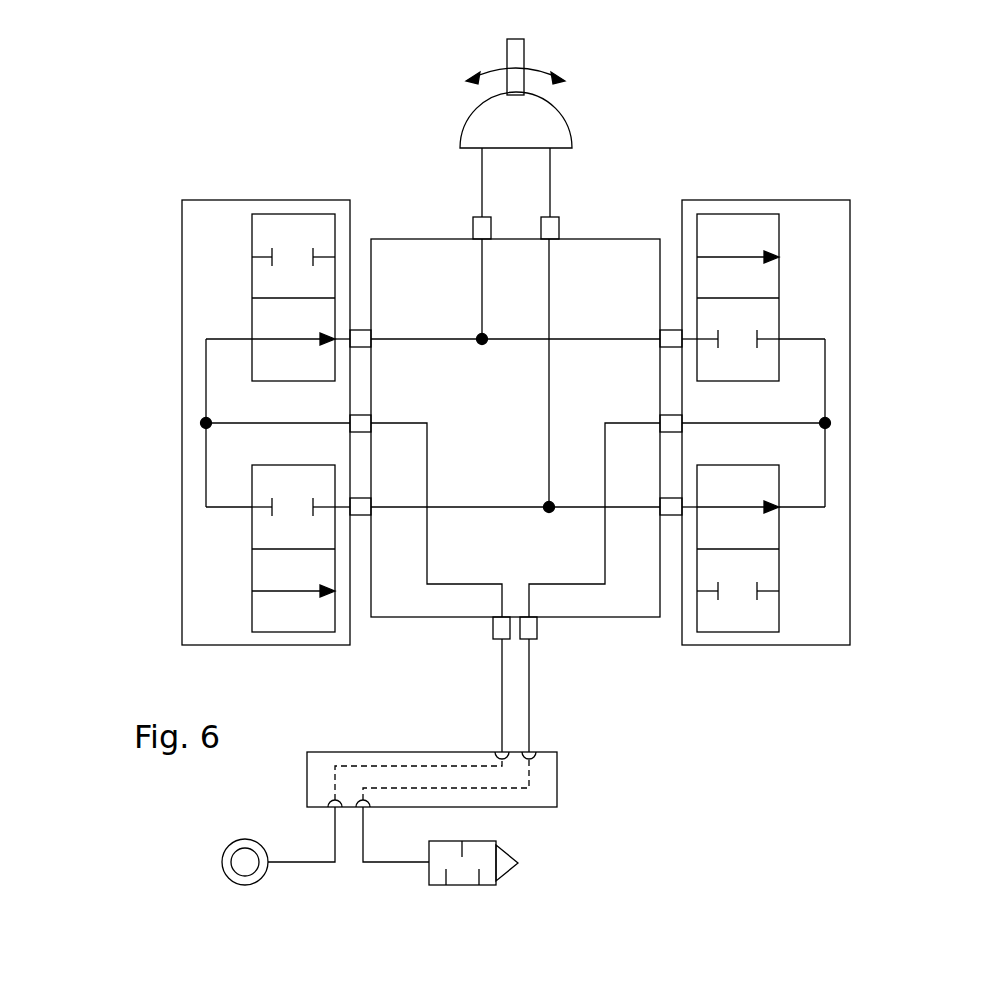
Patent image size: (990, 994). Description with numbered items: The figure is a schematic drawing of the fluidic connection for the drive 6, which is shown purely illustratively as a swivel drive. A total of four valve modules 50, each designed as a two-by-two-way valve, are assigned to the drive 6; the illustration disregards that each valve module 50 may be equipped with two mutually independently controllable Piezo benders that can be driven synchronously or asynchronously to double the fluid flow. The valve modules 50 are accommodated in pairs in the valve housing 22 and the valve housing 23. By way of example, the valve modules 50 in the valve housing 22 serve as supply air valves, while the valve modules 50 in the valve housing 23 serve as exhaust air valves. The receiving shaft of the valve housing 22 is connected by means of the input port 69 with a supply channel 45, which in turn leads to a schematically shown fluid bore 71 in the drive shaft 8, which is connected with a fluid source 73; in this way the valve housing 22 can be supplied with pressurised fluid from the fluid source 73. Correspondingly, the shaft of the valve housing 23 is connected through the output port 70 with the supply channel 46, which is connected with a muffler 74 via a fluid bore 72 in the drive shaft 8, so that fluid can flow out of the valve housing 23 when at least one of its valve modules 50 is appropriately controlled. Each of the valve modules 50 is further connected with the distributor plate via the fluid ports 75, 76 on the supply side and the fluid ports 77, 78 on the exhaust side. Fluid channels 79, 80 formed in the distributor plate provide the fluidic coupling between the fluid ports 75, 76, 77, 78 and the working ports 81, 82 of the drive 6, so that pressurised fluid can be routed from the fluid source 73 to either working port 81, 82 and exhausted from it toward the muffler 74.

The drive 6 is at (550, 135).
The drive shaft 8 is at (548, 780).
The valve housing 22 is at (182, 250).
The valve housing 23 is at (850, 393).
The supply channel 45 is at (460, 584).
The supply channel 46 is at (567, 584).
The valve module 50 is at (252, 323).
The input port 69 is at (357, 423).
The output port 70 is at (672, 423).
The fluid bore 71 is at (365, 765).
The fluid bore 72 is at (445, 787).
The fluid source 73 is at (245, 870).
The muffler 74 is at (490, 876).
The fluid port 75 is at (359, 330).
The fluid port 76 is at (357, 507).
The fluid port 77 is at (672, 330).
The fluid port 78 is at (672, 507).
The fluid channel 79 is at (481, 299).
The fluid channel 80 is at (552, 310).
The working port 81 is at (483, 228).
The working port 82 is at (555, 228).